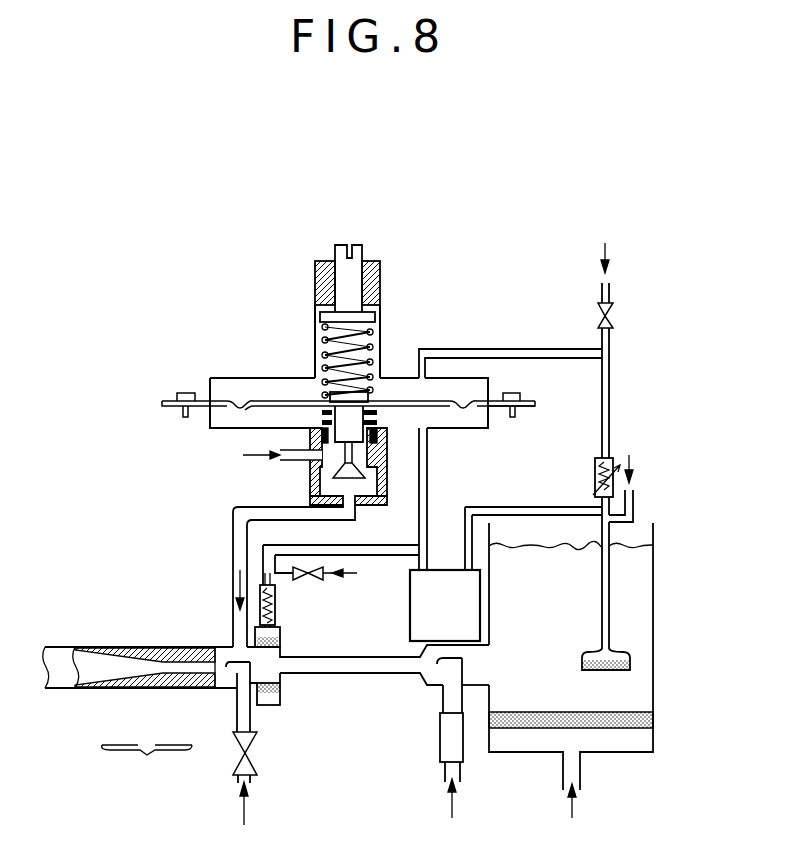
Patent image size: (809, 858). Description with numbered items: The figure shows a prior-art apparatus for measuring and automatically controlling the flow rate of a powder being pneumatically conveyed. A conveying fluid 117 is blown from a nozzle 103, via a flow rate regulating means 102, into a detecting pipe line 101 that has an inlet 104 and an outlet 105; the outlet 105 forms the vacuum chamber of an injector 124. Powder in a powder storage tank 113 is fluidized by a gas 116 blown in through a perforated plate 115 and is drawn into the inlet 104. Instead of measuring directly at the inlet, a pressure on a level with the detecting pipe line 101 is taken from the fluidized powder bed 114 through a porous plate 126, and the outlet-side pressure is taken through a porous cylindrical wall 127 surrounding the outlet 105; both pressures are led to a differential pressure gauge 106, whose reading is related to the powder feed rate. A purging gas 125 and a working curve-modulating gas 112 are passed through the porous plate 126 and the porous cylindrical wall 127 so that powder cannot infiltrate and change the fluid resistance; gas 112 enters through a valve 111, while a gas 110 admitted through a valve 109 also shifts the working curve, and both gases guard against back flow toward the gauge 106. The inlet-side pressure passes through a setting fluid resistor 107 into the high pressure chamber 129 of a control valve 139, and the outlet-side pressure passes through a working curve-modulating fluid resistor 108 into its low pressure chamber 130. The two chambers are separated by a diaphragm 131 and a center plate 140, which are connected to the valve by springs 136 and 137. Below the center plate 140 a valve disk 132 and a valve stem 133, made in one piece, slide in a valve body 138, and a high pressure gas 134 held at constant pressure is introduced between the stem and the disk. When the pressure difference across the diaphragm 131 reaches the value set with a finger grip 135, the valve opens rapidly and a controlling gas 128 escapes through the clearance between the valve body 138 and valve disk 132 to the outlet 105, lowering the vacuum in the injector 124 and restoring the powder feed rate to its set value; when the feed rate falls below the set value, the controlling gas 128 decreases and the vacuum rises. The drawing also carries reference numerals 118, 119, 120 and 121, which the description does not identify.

The detecting pipe line 101 is at (362, 666).
The flow rate regulating means 102 is at (447, 738).
The nozzle 103 is at (418, 668).
The inlet 104 is at (478, 670).
The outlet 105 is at (264, 675).
The differential pressure gauge 106 is at (412, 624).
The setting fluid resistor 107 is at (597, 470).
The working curve-modulating fluid resistor 108 is at (277, 607).
The valve 109 is at (613, 318).
The gas 110 is at (606, 248).
The valve 111 is at (312, 577).
The working curve-modulating gas 112 is at (362, 574).
The powder storage tank 113 is at (653, 530).
The fluidized powder bed 114 is at (633, 594).
The perforated plate 115 is at (650, 705).
The gas 116 is at (573, 817).
The conveying fluid 117 is at (452, 817).
The upper nozzle wall 118 is at (145, 688).
The lower nozzle wall 119 is at (230, 688).
The fuel valve 120 is at (236, 747).
The fuel inlet 121 is at (244, 813).
The injector 124 is at (140, 715).
The purging gas 125 is at (632, 457).
The porous plate 126 is at (632, 663).
The porous cylindrical wall 127 is at (280, 638).
The controlling gas 128 is at (236, 578).
The high pressure chamber 129 is at (232, 388).
The low pressure chamber 130 is at (220, 418).
The diaphragm 131 is at (262, 403).
The valve disk 132 is at (310, 481).
The valve stem 133 is at (365, 425).
The high pressure gas 134 is at (245, 457).
The finger grip 135 is at (348, 263).
The spring 136 is at (372, 342).
The spring 137 is at (320, 422).
The valve body 138 is at (386, 485).
The control valve 139 is at (163, 400).
The center plate 140 is at (300, 398).